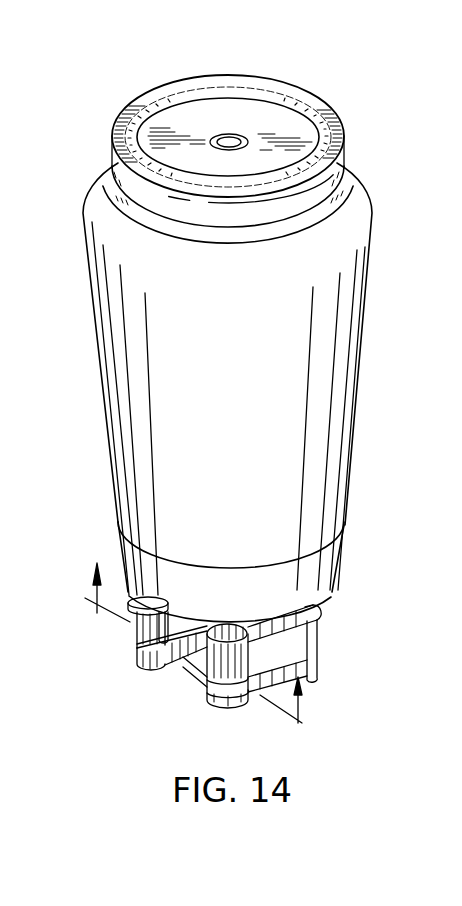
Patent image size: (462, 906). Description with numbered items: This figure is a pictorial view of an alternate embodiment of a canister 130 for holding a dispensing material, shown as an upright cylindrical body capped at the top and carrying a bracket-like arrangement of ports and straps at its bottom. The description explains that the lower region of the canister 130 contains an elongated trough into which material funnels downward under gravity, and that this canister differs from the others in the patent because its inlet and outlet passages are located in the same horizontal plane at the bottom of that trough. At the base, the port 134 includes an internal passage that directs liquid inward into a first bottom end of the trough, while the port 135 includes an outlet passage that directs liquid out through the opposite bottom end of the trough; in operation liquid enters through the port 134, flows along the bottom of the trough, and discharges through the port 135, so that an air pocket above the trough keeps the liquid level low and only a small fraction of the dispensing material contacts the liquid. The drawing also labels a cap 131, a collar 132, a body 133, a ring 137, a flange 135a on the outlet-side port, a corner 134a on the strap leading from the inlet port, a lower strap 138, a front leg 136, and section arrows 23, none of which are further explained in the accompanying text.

The canister 130 is at (340, 103).
The cap 131 is at (345, 135).
The collar 132 is at (333, 193).
The body housing 133 is at (352, 368).
The ring 137 is at (338, 530).
The port 135 is at (137, 632).
The leg flange 135a is at (128, 600).
The port 134 is at (307, 647).
The strap corner 134a is at (318, 615).
The lower strap 138 is at (310, 658).
The front leg 136 is at (225, 710).
The section line 23 is at (196, 649).